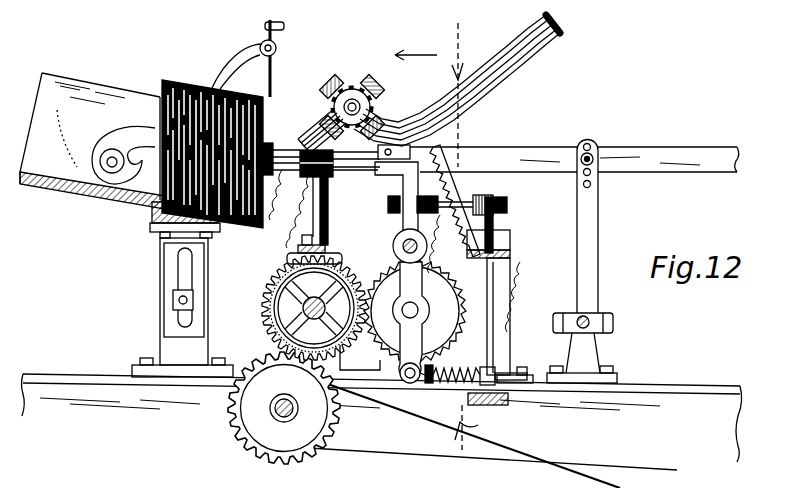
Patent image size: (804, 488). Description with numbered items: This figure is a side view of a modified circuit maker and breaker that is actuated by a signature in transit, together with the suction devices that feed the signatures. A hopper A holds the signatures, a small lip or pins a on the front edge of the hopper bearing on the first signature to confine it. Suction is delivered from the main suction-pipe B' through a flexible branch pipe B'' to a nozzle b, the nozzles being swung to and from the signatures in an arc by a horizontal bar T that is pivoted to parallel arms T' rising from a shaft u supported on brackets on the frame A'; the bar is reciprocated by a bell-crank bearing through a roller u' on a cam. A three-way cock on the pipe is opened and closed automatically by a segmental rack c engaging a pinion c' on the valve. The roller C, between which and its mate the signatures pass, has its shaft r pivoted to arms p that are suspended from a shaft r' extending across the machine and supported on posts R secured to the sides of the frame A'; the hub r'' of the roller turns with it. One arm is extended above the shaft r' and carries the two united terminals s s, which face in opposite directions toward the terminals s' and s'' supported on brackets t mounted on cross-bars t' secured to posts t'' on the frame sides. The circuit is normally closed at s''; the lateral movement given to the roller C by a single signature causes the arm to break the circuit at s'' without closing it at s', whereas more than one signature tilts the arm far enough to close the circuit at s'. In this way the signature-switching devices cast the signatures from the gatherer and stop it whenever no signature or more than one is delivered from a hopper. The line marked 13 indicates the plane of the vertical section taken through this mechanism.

The hopper A is at (141, 149).
The frame A' is at (382, 431).
The main suction-pipe B' is at (322, 130).
The flexible branch pipe B'' is at (457, 80).
The roller C is at (298, 308).
The segmental rack c is at (455, 193).
The pinion c' is at (351, 96).
The horizontal bar T is at (500, 152).
The parallel arm T' is at (587, 262).
The shaft u is at (584, 309).
The roller u' is at (256, 58).
The lip or pins a is at (300, 200).
The nozzle b is at (290, 172).
The bracket p is at (400, 222).
The shaft r is at (391, 306).
The shaft r' is at (390, 246).
The spoked wheel hub r'' is at (308, 308).
The post R is at (377, 357).
The terminal s is at (397, 198).
The terminal s' is at (403, 194).
The terminal s'' is at (486, 195).
The bracket t is at (315, 213).
The cross-bar t' is at (330, 213).
The post t'' is at (500, 301).
The section line 13- 13 is at (464, 248).